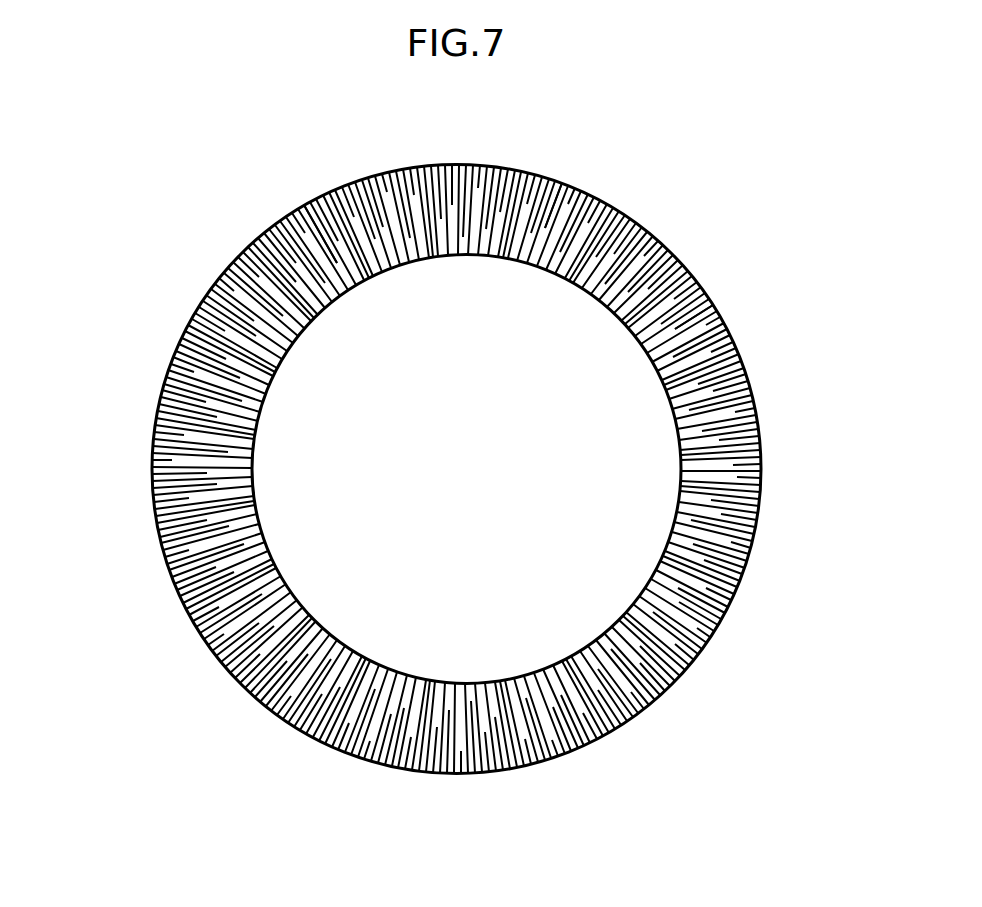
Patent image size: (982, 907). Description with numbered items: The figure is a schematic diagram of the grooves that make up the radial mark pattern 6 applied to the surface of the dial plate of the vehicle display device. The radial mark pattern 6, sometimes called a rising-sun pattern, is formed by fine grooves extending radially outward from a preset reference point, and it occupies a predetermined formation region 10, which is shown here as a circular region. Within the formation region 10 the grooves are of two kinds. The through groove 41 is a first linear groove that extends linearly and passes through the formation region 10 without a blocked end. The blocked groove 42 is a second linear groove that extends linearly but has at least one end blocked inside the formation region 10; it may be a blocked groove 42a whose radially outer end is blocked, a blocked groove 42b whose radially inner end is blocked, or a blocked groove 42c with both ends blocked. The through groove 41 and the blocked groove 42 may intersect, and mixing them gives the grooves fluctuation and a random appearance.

The radial mark pattern 6 is at (216, 217).
The formation region 10 is at (670, 261).
The through groove 41 is at (612, 222).
The blocked groove 42 is at (467, 192).
The blocked groove 42a is at (330, 246).
The blocked groove 42b is at (563, 226).
The blocked groove 42c is at (675, 330).